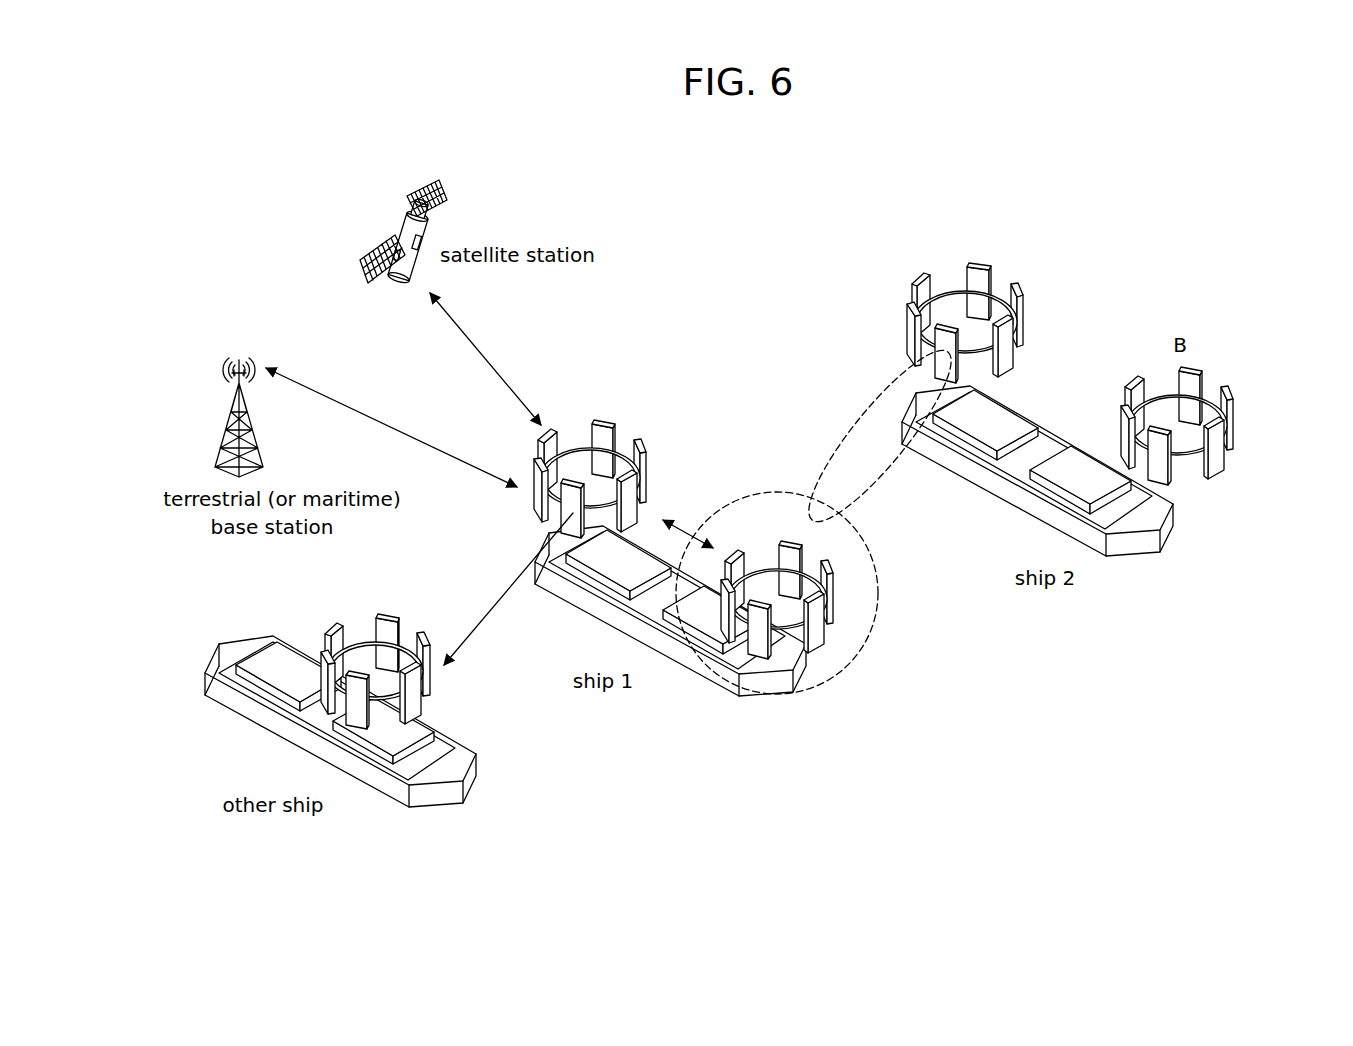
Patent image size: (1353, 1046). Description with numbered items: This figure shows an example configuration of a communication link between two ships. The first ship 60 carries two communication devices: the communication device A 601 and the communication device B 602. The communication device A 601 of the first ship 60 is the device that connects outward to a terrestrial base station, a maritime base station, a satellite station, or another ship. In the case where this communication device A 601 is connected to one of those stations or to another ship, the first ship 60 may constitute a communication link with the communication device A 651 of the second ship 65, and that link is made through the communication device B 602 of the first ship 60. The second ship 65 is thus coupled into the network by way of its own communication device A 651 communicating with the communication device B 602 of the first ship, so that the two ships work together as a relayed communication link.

The ship 1 60 is at (670, 611).
The communication device A 601 is at (597, 463).
The communication device B 602 is at (790, 593).
The ship 2 65 is at (1037, 481).
The communication device A 651 is at (982, 307).